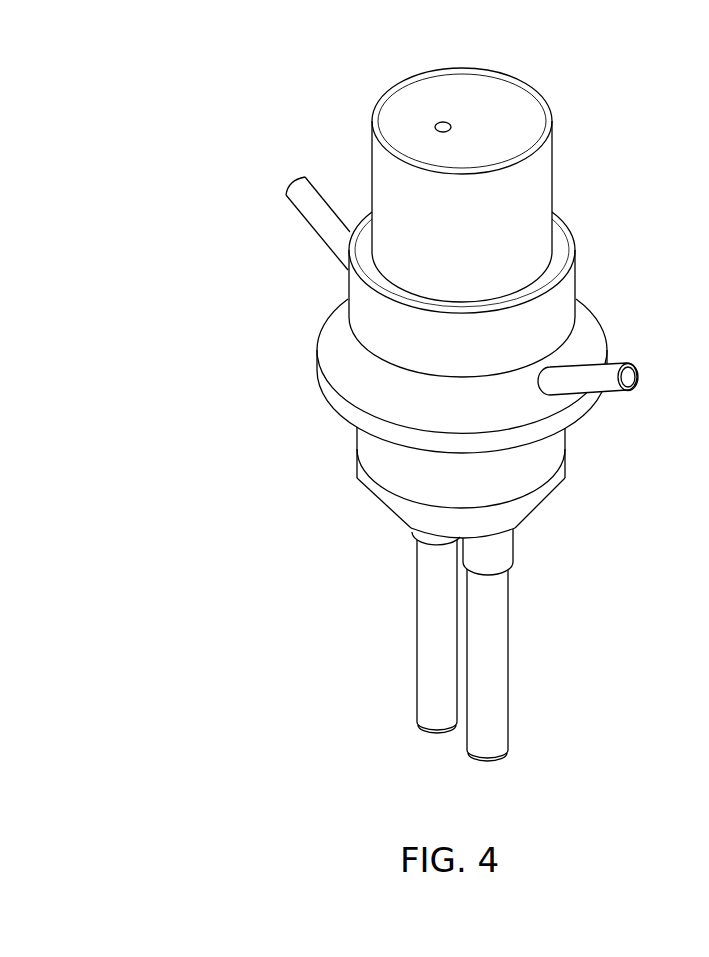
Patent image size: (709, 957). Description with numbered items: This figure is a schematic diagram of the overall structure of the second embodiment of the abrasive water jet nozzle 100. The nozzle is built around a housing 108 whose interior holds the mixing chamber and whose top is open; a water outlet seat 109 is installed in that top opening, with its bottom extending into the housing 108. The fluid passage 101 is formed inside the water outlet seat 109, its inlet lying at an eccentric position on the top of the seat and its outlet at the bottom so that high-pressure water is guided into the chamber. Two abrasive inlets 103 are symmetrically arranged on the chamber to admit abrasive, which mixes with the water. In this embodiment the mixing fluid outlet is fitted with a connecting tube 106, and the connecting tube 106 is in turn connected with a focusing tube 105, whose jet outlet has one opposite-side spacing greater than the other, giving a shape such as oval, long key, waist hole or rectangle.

The abrasive water jet nozzle 100 is at (628, 284).
The fluid passage 101 is at (438, 125).
The abrasive inlet 103 is at (300, 220).
The focusing tube 105 is at (497, 668).
The connecting tube 106 is at (498, 552).
The housing 108 is at (535, 465).
The water outlet seat 109 is at (553, 153).